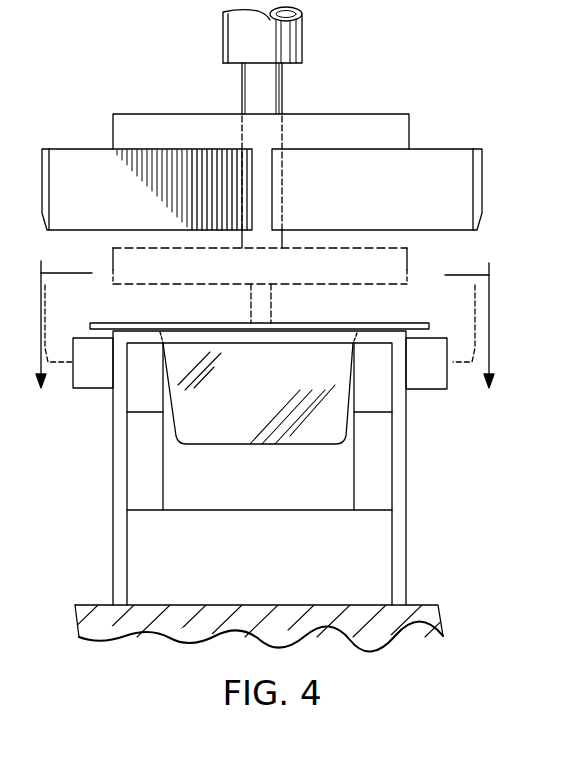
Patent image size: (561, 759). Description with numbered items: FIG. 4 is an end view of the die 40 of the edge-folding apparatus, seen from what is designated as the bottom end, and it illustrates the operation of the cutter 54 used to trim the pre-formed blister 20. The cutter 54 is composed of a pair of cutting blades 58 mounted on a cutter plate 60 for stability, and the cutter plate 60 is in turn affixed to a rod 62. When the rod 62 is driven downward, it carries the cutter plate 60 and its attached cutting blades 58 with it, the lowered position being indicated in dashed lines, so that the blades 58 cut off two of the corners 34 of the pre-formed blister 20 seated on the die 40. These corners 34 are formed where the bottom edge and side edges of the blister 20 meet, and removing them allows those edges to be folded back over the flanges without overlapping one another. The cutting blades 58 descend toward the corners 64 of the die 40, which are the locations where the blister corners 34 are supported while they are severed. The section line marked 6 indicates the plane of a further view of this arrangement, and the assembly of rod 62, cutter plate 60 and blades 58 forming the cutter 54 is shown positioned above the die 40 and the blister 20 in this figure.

The cutter 54 is at (271, 165).
The rod 62 is at (248, 90).
The cutter plate 60 is at (397, 123).
The cutting blades 58 is at (83, 157).
The pre-formed blister 20 is at (104, 310).
The corners 34 is at (118, 322).
The corners of the die 64 is at (407, 468).
The die 40 is at (269, 468).
The section line 6- 6 is at (267, 342).